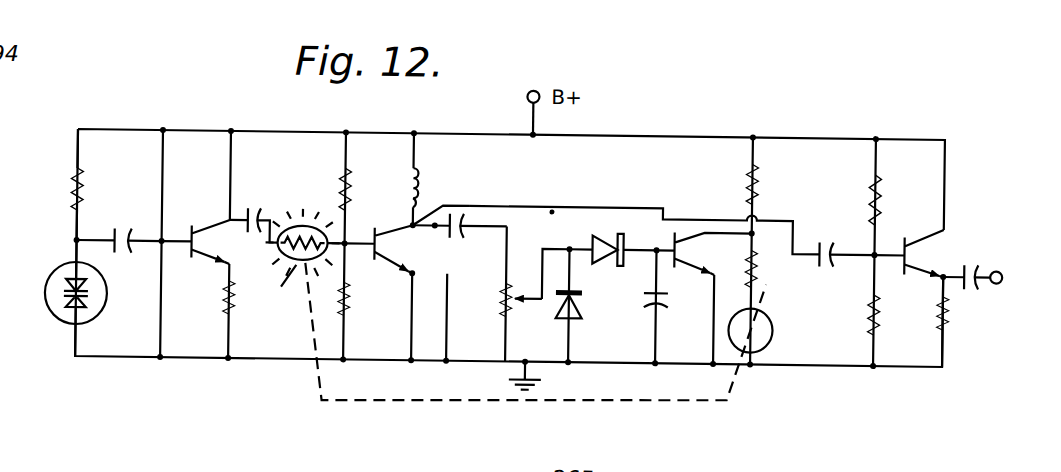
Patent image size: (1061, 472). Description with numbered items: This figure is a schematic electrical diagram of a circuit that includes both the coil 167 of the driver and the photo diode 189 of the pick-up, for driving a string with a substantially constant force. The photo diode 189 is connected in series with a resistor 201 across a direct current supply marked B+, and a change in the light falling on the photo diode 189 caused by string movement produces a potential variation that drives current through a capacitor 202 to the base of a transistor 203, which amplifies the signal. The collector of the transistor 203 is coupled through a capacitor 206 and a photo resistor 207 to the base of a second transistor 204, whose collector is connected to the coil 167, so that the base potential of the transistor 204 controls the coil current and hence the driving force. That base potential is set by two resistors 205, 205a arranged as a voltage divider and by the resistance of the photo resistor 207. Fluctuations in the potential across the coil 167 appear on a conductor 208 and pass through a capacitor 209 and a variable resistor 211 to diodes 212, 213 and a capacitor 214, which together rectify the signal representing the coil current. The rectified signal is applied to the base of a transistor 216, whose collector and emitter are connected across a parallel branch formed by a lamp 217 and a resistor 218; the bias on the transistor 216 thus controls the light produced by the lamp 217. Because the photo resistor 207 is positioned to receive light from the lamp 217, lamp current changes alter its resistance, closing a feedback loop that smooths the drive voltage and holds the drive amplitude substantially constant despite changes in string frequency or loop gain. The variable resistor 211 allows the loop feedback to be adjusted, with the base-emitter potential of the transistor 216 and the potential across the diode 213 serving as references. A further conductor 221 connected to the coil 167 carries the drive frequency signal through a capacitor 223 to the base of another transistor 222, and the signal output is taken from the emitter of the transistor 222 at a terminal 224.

The coil 167 is at (426, 176).
The photo diode 189 is at (56, 273).
The resistor 201 is at (74, 183).
The capacitor 202 is at (123, 229).
The transistor 203 is at (197, 214).
The transistor 204 is at (378, 220).
The resistor 205 is at (350, 179).
The resistor 205a is at (351, 302).
The capacitor 206 is at (262, 213).
The photo resistor 207 is at (257, 299).
The conductor 208 is at (436, 226).
The capacitor 209 is at (466, 207).
The variable resistor 211 is at (506, 298).
The diode 212 is at (583, 313).
The diode 213 is at (603, 253).
The capacitor 214 is at (660, 303).
The transistor 216 is at (688, 231).
The lamp 217 is at (778, 330).
The resistor 218 is at (768, 270).
The conductor 221 is at (553, 206).
The transistor 222 is at (932, 257).
The capacitor 223 is at (836, 241).
The terminal 224 is at (998, 272).